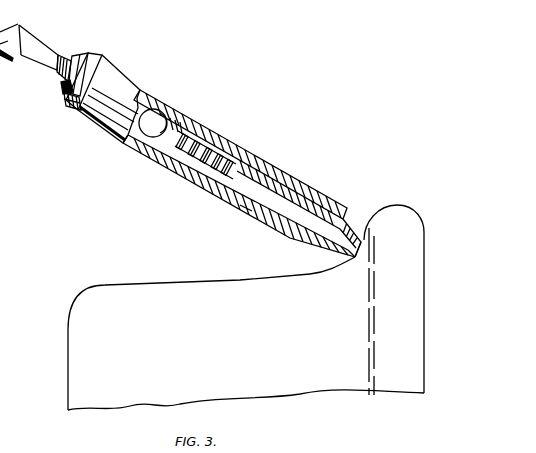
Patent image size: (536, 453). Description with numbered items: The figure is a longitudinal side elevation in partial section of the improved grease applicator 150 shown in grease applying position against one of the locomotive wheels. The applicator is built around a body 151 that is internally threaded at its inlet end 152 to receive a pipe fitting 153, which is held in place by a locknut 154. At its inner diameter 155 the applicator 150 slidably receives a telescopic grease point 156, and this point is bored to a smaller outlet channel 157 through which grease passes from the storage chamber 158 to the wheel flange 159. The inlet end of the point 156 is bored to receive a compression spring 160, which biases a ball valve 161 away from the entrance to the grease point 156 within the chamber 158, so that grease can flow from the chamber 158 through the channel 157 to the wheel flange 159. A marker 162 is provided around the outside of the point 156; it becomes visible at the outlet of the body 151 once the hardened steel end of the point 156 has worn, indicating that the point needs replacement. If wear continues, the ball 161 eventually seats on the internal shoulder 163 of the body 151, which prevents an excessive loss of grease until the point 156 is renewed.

The improved applicator 150 is at (260, 126).
The body 151 is at (201, 184).
The inlet end 152 is at (97, 60).
The pipe fitting 153 is at (53, 49).
The locknut 154 is at (60, 94).
The inner diameter 155 is at (302, 184).
The telescopic grease point 156 is at (341, 228).
The outlet channel 157 is at (348, 252).
The storage chamber 158 is at (150, 105).
The wheel flange 159 is at (362, 246).
The compression spring 160 is at (193, 128).
The ball valve 161 is at (148, 143).
The marker 162 is at (277, 177).
The internal shoulder 163 is at (247, 201).